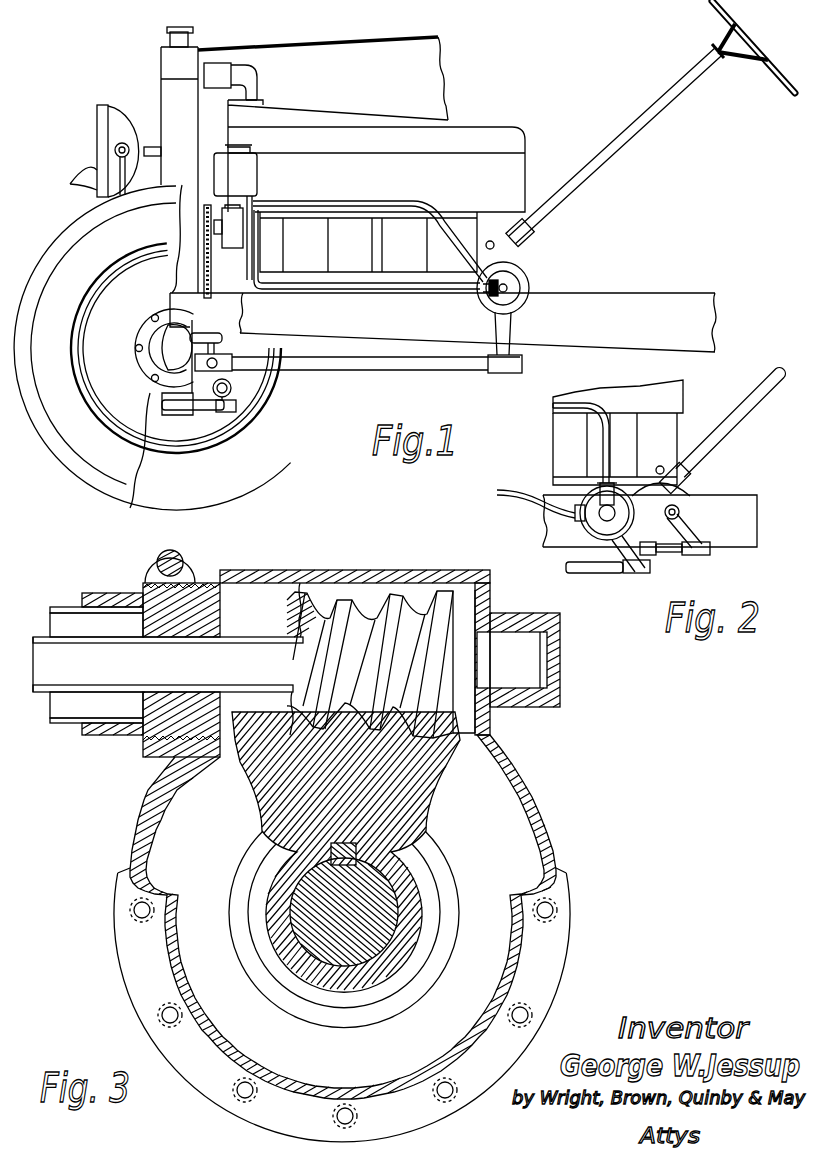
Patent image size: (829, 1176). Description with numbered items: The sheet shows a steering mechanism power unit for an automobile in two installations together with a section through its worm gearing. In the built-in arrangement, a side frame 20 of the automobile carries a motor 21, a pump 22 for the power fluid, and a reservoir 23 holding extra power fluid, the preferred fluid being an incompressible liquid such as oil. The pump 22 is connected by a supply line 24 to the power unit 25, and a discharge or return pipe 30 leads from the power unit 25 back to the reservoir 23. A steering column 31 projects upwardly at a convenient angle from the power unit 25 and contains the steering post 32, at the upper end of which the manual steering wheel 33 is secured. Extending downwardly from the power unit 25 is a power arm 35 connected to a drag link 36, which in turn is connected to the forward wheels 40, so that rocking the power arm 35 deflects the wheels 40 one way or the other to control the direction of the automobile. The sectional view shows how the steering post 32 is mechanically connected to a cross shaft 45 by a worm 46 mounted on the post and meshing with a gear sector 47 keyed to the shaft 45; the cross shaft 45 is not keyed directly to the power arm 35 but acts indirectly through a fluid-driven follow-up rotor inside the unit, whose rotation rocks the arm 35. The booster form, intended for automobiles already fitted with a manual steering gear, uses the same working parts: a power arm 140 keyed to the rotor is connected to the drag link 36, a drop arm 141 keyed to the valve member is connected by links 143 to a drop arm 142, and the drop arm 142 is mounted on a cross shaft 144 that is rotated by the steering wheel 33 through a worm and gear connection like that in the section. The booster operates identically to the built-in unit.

In FIG. 1, the side frame 20 is at (600, 305).
In FIG. 2, the side frame 20 is at (748, 512).
In FIG. 1, the motor 21 is at (512, 172).
In FIG. 2, the motor 21 is at (672, 400).
In FIG. 1, the pump 22 is at (236, 240).
In FIG. 1, the reservoir 23 is at (247, 186).
In FIG. 1, the supply line 24 is at (388, 203).
In FIG. 2, the supply line 24 is at (608, 402).
In FIG. 1, the power unit 25 is at (512, 298).
In FIG. 2, the power unit 25 is at (595, 525).
In FIG. 1, the discharge or return pipe 30 is at (372, 292).
In FIG. 2, the discharge or return pipe 30 is at (523, 497).
In FIG. 1, the steering column 31 is at (612, 155).
In FIG. 2, the steering column 31 is at (738, 418).
In FIG. 3, the steering post 32 is at (42, 632).
In FIG. 1, the manual steering wheel 33 is at (712, 3).
In FIG. 1, the power arm 35 is at (499, 328).
In FIG. 1, the drag link 36 is at (426, 363).
In FIG. 2, the drag link 36 is at (595, 573).
In FIG. 1, the forward wheels 40 is at (265, 478).
In FIG. 3, the cross shaft 45 is at (312, 898).
In FIG. 3, the worm 46 is at (342, 605).
In FIG. 3, the gear sector 47 is at (415, 803).
In FIG. 2, the power arm 140 is at (636, 575).
In FIG. 2, the drop arm 141 is at (641, 543).
In FIG. 2, the drop arm 142 is at (700, 536).
In FIG. 2, the links 143 is at (670, 552).
In FIG. 2, the cross shaft 144 is at (681, 512).